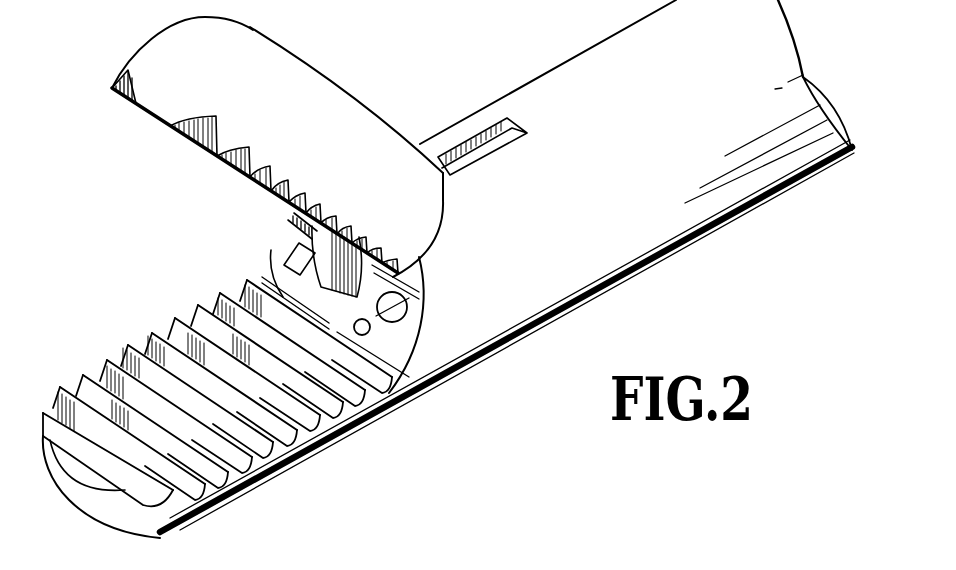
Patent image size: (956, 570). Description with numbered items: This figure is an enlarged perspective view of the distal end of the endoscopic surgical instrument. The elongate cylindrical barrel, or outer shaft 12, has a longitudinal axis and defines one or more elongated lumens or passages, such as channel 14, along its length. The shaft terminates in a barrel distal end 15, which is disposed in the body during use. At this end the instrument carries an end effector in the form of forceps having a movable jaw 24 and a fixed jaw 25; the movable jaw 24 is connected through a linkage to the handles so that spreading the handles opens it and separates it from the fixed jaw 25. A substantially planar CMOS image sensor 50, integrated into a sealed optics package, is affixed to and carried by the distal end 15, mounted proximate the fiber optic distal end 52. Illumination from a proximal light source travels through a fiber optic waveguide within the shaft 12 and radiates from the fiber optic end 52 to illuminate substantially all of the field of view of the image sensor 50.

The outer shaft 12 is at (580, 70).
The movable jaw 24 is at (285, 62).
The barrel distal end 15 is at (271, 268).
The channel 14 is at (407, 302).
The CMOS image sensor 50 is at (287, 242).
The fiber optic distal end 52 is at (421, 338).
The fixed jaw 25 is at (227, 510).